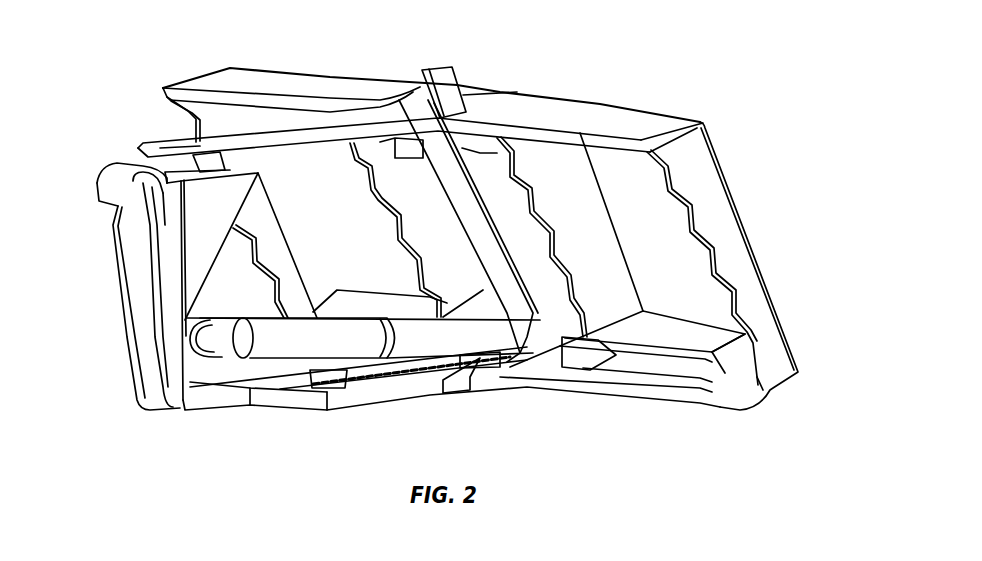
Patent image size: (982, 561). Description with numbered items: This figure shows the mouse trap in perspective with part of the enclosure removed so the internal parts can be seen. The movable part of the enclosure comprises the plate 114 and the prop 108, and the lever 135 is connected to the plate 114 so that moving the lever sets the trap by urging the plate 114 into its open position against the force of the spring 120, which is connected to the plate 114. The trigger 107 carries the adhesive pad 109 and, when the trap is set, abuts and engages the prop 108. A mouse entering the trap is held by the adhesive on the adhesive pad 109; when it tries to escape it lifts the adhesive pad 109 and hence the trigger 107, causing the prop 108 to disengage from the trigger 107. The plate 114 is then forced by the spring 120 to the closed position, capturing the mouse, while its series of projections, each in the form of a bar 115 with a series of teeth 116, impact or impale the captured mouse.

The trigger 107 is at (110, 180).
The prop 108 is at (160, 147).
The adhesive pad 109 is at (412, 372).
The plate 114 is at (772, 257).
The bar 115 is at (218, 122).
The teeth 116 is at (578, 310).
The spring 120 is at (343, 340).
The lever 135 is at (432, 68).